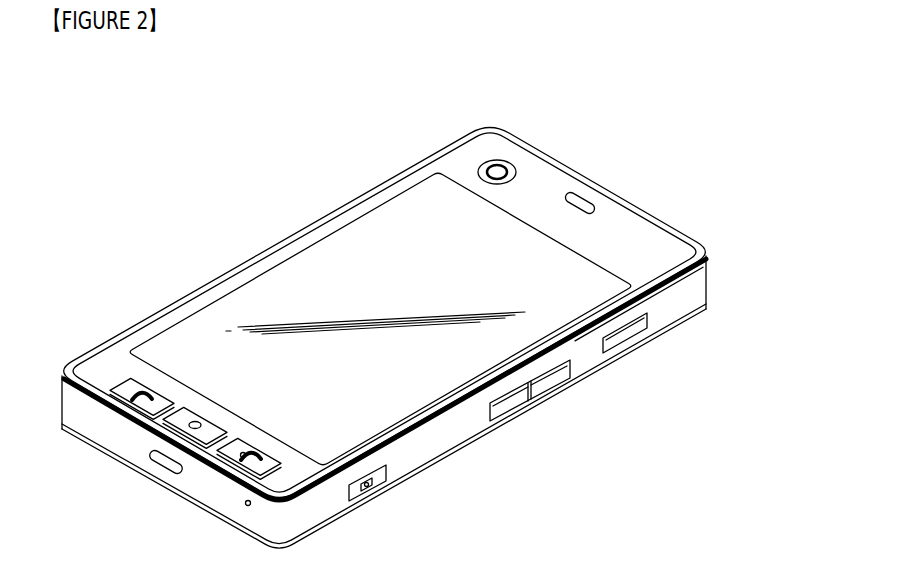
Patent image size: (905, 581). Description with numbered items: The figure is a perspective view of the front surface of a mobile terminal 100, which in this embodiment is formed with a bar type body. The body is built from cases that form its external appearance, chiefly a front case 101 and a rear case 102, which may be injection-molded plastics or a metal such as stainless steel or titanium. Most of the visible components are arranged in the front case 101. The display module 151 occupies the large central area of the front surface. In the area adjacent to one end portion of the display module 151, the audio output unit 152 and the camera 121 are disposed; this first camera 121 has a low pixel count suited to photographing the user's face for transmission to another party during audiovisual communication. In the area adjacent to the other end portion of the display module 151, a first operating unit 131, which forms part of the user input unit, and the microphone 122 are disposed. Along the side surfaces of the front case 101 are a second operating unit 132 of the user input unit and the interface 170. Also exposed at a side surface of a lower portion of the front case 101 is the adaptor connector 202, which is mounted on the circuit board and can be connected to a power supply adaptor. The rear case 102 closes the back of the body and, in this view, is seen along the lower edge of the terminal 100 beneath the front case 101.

The mobile terminal 100 is at (349, 188).
The front case 101 is at (700, 278).
The rear case 102 is at (707, 309).
The camera 121 is at (503, 170).
The microphone 122 is at (244, 506).
The first operating unit 131 is at (121, 384).
The second operating unit 132 is at (508, 395).
The display module 151 is at (284, 276).
The audio output unit 152 is at (583, 202).
The interface 170 is at (623, 338).
The adaptor connector 202 is at (168, 468).